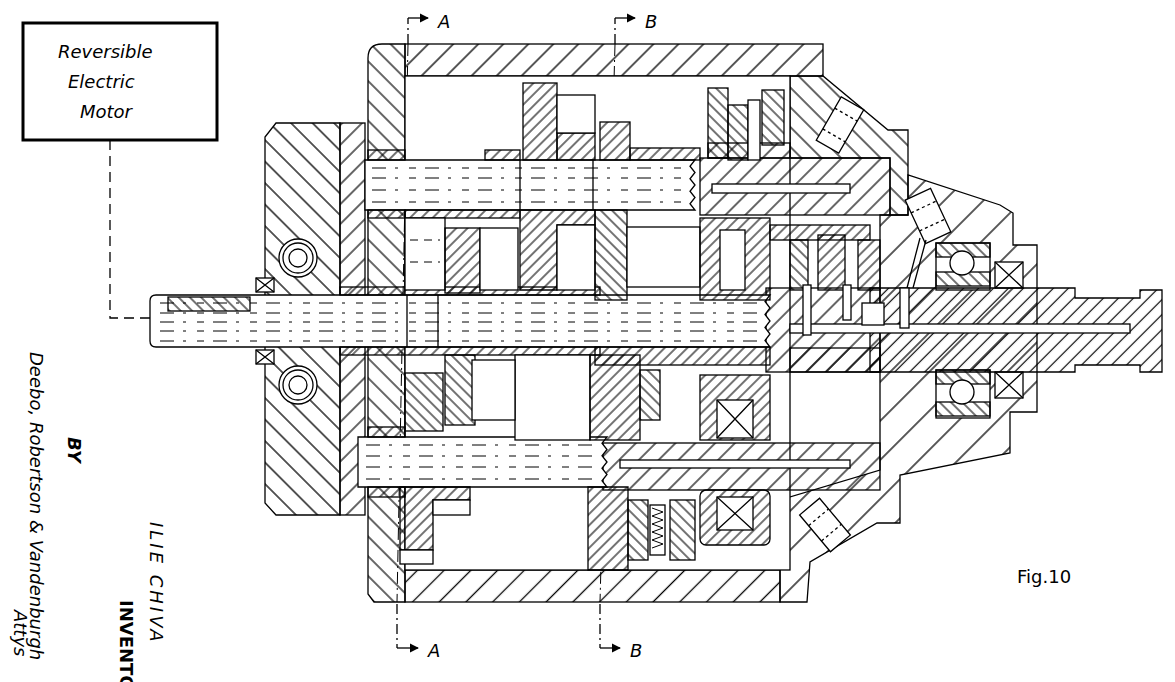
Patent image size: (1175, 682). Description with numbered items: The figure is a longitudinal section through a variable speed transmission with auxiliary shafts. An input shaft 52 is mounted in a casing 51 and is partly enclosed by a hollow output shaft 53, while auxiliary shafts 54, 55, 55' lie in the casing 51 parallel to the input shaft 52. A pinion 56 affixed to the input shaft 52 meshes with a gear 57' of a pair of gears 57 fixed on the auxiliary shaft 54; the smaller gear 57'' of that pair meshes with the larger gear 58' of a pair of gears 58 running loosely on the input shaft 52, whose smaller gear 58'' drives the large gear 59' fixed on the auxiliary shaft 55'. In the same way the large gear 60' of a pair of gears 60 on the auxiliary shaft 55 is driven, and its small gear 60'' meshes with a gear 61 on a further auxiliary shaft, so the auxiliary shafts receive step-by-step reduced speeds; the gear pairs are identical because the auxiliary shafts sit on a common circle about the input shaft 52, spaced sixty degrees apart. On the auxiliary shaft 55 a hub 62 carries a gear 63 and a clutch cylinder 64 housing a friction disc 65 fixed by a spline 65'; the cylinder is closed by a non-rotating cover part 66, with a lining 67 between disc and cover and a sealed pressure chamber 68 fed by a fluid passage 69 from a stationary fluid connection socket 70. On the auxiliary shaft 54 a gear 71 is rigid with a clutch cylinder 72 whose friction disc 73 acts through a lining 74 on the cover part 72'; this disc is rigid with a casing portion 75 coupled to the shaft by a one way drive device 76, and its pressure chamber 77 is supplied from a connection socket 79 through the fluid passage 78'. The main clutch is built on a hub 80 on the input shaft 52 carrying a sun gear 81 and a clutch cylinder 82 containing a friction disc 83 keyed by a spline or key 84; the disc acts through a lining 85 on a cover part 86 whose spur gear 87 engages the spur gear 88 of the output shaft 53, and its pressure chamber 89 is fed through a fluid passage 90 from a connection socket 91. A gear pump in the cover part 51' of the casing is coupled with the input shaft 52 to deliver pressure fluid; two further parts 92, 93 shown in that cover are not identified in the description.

The casing 51 is at (721, 305).
The cover part 51' is at (358, 323).
The input shaft 52 is at (200, 330).
The output shaft 53 is at (1062, 296).
The auxiliary shaft 54 is at (550, 492).
The auxiliary shaft 55 is at (530, 163).
The auxiliary shaft 55' is at (425, 248).
The pinion 56 is at (440, 292).
The pair of gears 57 is at (462, 393).
The gear 57' is at (437, 525).
The smaller gear 57'' is at (476, 525).
The pair of gears 58 is at (555, 325).
The larger gear 58' is at (488, 390).
The smaller gear 58'' is at (499, 256).
The large gear 59' is at (499, 139).
The pair of gears 60 is at (576, 121).
The large gear 60' is at (517, 121).
The small gear 60'' is at (578, 114).
The gear 61 is at (590, 320).
The hub 62 is at (668, 155).
The gear 63 is at (618, 125).
The clutch cylinder 64 is at (716, 114).
The friction disc 65 is at (748, 83).
The spline 65' is at (770, 135).
The cover part 66 is at (785, 165).
The lining 67 is at (762, 95).
The pressure chamber 68 is at (740, 120).
The fluid passage 69 is at (776, 183).
The fluid connection socket 70 is at (856, 112).
The gear 71 is at (600, 418).
The clutch cylinder 72 is at (586, 570).
The cover part 72' is at (720, 570).
The friction disc 73 is at (600, 595).
The lining 74 is at (656, 555).
The casing portion 75 is at (730, 538).
The one way drive device 76 is at (740, 428).
The pressure chamber 77 is at (672, 442).
The sleeve 78' is at (741, 467).
The connection socket 79 is at (842, 532).
The hub 80 is at (700, 360).
The sun gear 81 is at (607, 270).
The clutch cylinder 82 is at (792, 380).
The friction disc 83 is at (812, 322).
The spline or key 84 is at (848, 320).
The lining 85 is at (800, 248).
The cover part 86 is at (800, 285).
The spur gear 87 is at (868, 300).
The spur gear 88 is at (850, 305).
The pressure chamber 89 is at (770, 308).
The fluid passage 90 is at (912, 326).
The connection socket 91 is at (940, 196).
The bearing 92 is at (290, 256).
The bearing 93 is at (292, 387).